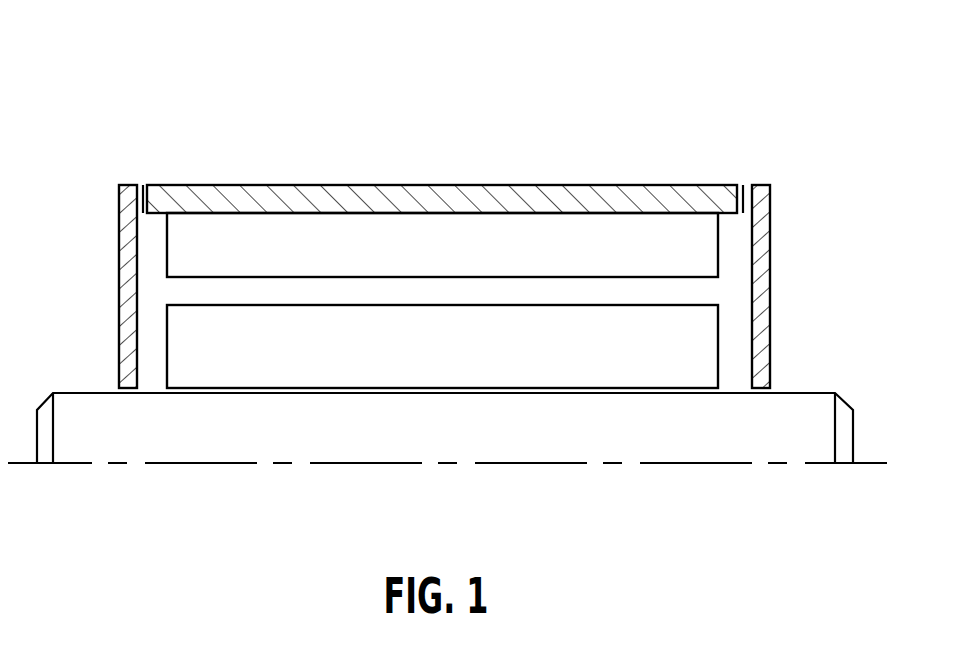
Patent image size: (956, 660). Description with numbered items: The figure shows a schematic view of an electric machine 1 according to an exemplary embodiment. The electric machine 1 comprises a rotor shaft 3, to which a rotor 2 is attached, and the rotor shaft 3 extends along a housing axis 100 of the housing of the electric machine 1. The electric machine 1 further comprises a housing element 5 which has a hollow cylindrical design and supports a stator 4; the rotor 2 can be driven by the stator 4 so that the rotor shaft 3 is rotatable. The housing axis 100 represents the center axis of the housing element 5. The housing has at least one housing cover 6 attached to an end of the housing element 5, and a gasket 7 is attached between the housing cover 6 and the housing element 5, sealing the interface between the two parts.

The electric machine 1 is at (110, 130).
The rotor 2 is at (708, 352).
The rotor shaft 3 is at (86, 405).
The stator 4 is at (708, 242).
The housing element 5 is at (586, 192).
The housing cover 6 is at (122, 287).
The gasket 7 is at (146, 184).
The housing axis 100 is at (866, 464).